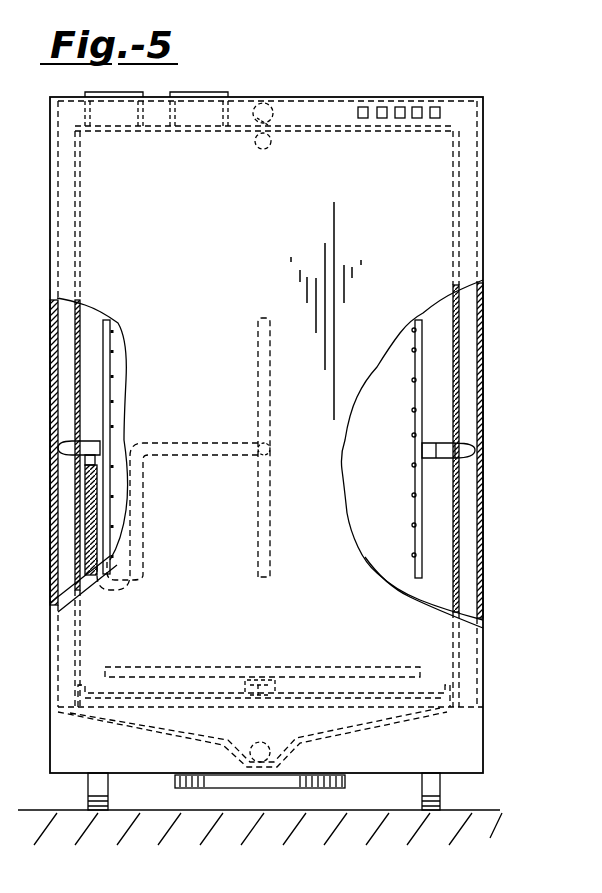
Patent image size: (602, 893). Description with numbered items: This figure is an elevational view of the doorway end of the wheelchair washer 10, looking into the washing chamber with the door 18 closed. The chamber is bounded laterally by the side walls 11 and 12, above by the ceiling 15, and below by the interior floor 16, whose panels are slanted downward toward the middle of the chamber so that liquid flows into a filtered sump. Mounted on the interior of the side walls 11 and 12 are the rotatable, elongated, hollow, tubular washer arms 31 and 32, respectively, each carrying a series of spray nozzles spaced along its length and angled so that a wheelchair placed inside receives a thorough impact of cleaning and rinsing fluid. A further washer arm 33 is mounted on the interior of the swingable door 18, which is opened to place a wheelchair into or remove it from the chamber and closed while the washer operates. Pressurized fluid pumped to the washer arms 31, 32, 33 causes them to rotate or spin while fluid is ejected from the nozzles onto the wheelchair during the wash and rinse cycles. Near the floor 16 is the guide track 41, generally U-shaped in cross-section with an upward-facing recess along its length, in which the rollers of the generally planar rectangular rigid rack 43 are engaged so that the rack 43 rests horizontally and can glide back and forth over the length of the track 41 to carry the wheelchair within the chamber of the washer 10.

The washer 10 is at (490, 190).
The side wall 11 is at (482, 347).
The side wall 12 is at (52, 273).
The ceiling 15 is at (313, 97).
The interior floor 16 is at (400, 727).
The door 18 is at (250, 216).
The washer arm 31 is at (415, 395).
The washer arm 32 is at (112, 365).
The washer arm 33 is at (257, 380).
The guide track 41 is at (298, 668).
The rack 43 is at (182, 665).